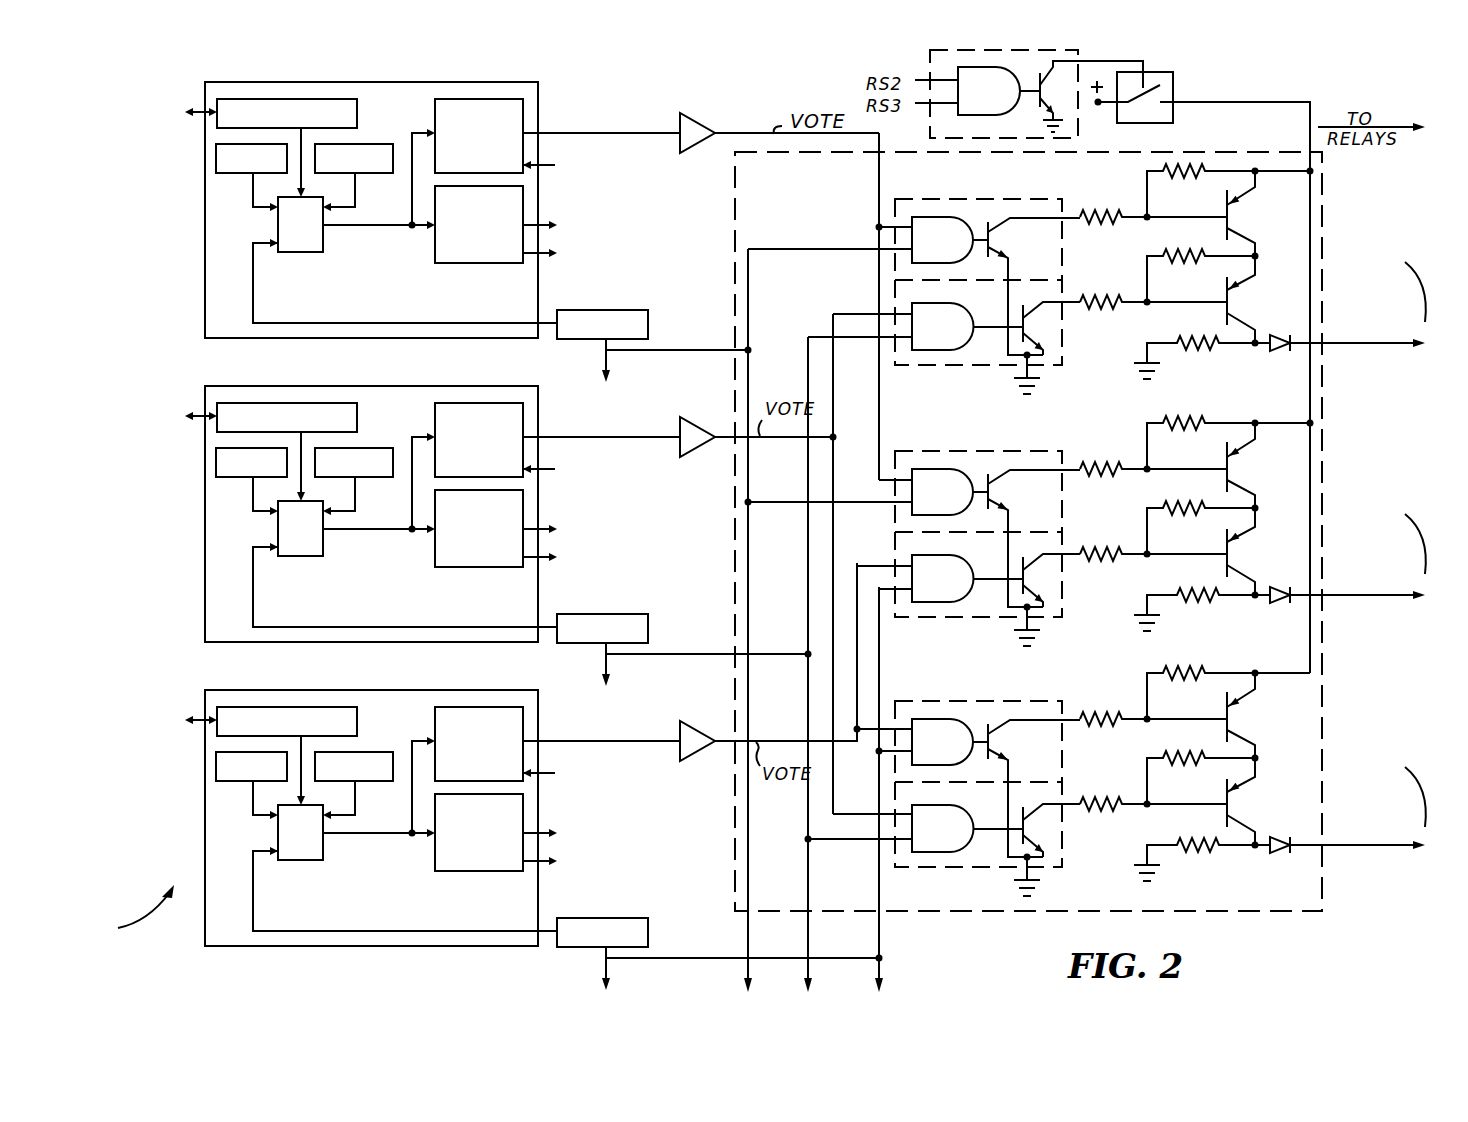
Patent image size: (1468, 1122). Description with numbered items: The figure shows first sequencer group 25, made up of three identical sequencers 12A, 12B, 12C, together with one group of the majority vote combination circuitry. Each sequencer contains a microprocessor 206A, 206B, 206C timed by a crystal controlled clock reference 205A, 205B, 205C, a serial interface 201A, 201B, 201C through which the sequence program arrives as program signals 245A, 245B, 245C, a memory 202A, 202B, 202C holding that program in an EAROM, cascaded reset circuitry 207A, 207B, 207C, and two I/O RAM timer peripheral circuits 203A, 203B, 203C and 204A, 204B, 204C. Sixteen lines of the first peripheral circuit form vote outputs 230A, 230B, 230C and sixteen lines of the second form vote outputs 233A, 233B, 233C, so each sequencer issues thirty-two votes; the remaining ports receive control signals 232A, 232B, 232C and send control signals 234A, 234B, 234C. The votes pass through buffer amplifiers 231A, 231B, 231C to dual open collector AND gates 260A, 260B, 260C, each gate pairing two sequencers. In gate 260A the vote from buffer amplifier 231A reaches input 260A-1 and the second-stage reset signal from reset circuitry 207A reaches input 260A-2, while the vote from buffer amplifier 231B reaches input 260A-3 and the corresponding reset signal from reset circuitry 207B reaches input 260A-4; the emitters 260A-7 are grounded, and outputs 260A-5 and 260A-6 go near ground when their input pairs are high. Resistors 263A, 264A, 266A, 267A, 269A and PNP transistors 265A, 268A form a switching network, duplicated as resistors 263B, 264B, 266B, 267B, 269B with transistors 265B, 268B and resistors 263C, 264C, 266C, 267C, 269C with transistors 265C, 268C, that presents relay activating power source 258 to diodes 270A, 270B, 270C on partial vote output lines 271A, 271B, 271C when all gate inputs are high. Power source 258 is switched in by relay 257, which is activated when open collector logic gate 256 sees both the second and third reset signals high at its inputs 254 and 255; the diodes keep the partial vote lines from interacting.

The first sequencer group 25 is at (126, 915).
The sequencer 12A is at (205, 252).
The sequencer 12B is at (205, 556).
The sequencer 12C is at (205, 860).
The serial interface 201A is at (288, 99).
The serial interface 201B is at (288, 403).
The serial interface 201C is at (288, 707).
The memory 202A is at (383, 143).
The memory 202B is at (383, 447).
The memory 202C is at (383, 751).
The peripheral circuit 203A is at (472, 99).
The peripheral circuit 203B is at (472, 403).
The peripheral circuit 203C is at (472, 707).
The peripheral circuit 204A is at (495, 263).
The peripheral circuit 204B is at (495, 567).
The peripheral circuit 204C is at (495, 871).
The clock reference 205A is at (223, 173).
The clock reference 205B is at (223, 477).
The clock reference 205C is at (223, 781).
The microprocessor 206A is at (290, 252).
The microprocessor 206B is at (290, 556).
The microprocessor 206C is at (290, 860).
The cascaded reset circuitry 207A is at (598, 342).
The cascaded reset circuitry 207B is at (640, 614).
The cascaded reset circuitry 207C is at (598, 950).
The program signals 245A is at (80, 150).
The program signals 245B is at (80, 454).
The program signals 245C is at (80, 758).
The outputs 230A is at (556, 134).
The output lines 230B is at (556, 438).
The output lines 230C is at (556, 742).
The buffer amplifier 231A is at (712, 100).
The buffer amplifier 231B is at (700, 407).
The buffer amplifier 231C is at (700, 711).
The control signals 232A is at (652, 182).
The control signals 232B is at (652, 486).
The control signals 232C is at (652, 790).
The outputs 233A is at (655, 226).
The output lines 233B is at (655, 530).
The output lines 233C is at (655, 834).
The control signals 234A is at (645, 270).
The control signals 234B is at (645, 574).
The control signals 234C is at (645, 878).
The input 254 is at (921, 80).
The input 255 is at (918, 103).
The open collector logic gate 256 is at (1036, 144).
The relay 257 is at (1173, 76).
The relay activating power source 258 is at (1098, 105).
The open collector logic gate 260A is at (975, 365).
The input 260A-1 is at (878, 227).
The input 260A-2 is at (878, 250).
The input 260A-3 is at (878, 312).
The input 260A-4 is at (895, 350).
The output 260A-5 is at (1075, 190).
The output 260A-6 is at (1065, 305).
The output 260A-7 is at (1036, 373).
The open collector logic gate 260B is at (900, 618).
The open collector logic gate 260C is at (910, 867).
The resistor 263A is at (1230, 189).
The resistor 263B is at (1230, 441).
The resistor 263C is at (1228, 691).
The resistor 264A is at (1095, 225).
The resistor 264B is at (1095, 477).
The resistor 264C is at (1095, 727).
The PNP transistor 265A is at (1231, 225).
The PNP transistor 265B is at (1231, 477).
The PNP transistor 265C is at (1231, 727).
The resistor 266A is at (1192, 243).
The resistor 266B is at (1192, 495).
The resistor 266C is at (1192, 745).
The resistor 267A is at (1137, 303).
The resistor 267B is at (1137, 555).
The resistor 267C is at (1077, 826).
The PNP transistor 268A is at (1231, 313).
The PNP transistor 268B is at (1231, 565).
The PNP transistor 268C is at (1231, 815).
The resistor 269A is at (1179, 350).
The resistor 269B is at (1179, 602).
The resistor 269C is at (1211, 846).
The diode 270A is at (1277, 356).
The diode 270B is at (1277, 608).
The diode 270C is at (1286, 848).
The partial vote output line 271A is at (1352, 354).
The partial vote output line 271B is at (1352, 606).
The partial vote output line 271C is at (1352, 854).